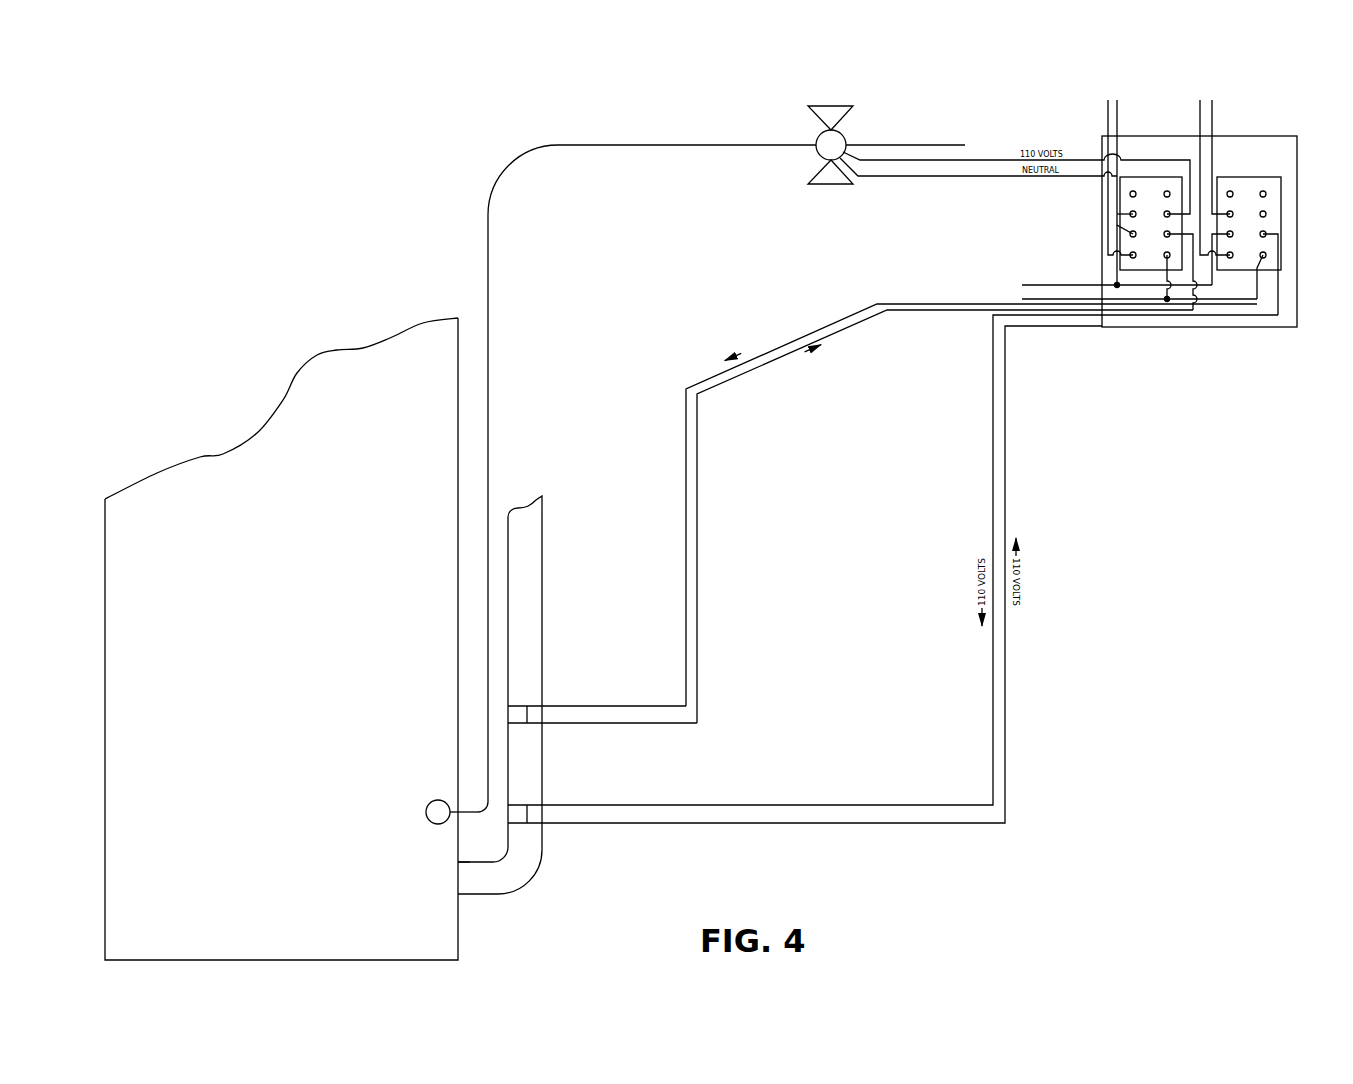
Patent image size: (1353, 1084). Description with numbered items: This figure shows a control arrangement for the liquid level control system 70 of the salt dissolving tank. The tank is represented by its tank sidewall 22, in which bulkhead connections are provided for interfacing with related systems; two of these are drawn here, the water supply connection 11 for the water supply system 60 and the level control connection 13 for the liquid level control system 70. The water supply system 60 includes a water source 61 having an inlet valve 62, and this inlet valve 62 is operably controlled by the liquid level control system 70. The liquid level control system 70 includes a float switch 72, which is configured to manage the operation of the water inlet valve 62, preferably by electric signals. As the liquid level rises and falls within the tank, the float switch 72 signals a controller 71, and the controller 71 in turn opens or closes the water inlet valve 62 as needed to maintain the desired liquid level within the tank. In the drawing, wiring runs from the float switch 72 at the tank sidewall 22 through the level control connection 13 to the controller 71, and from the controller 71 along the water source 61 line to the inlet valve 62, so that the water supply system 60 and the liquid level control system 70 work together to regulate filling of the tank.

The water supply connection 11 is at (433, 797).
The level control connection 13 is at (455, 877).
The tank sidewall 22 is at (327, 698).
The water supply system 60 is at (675, 105).
The water source 61 is at (965, 145).
The inlet valve 62 is at (845, 100).
The liquid level control system 70 is at (560, 572).
The controller 71 is at (1122, 332).
The float switch 72 is at (552, 692).